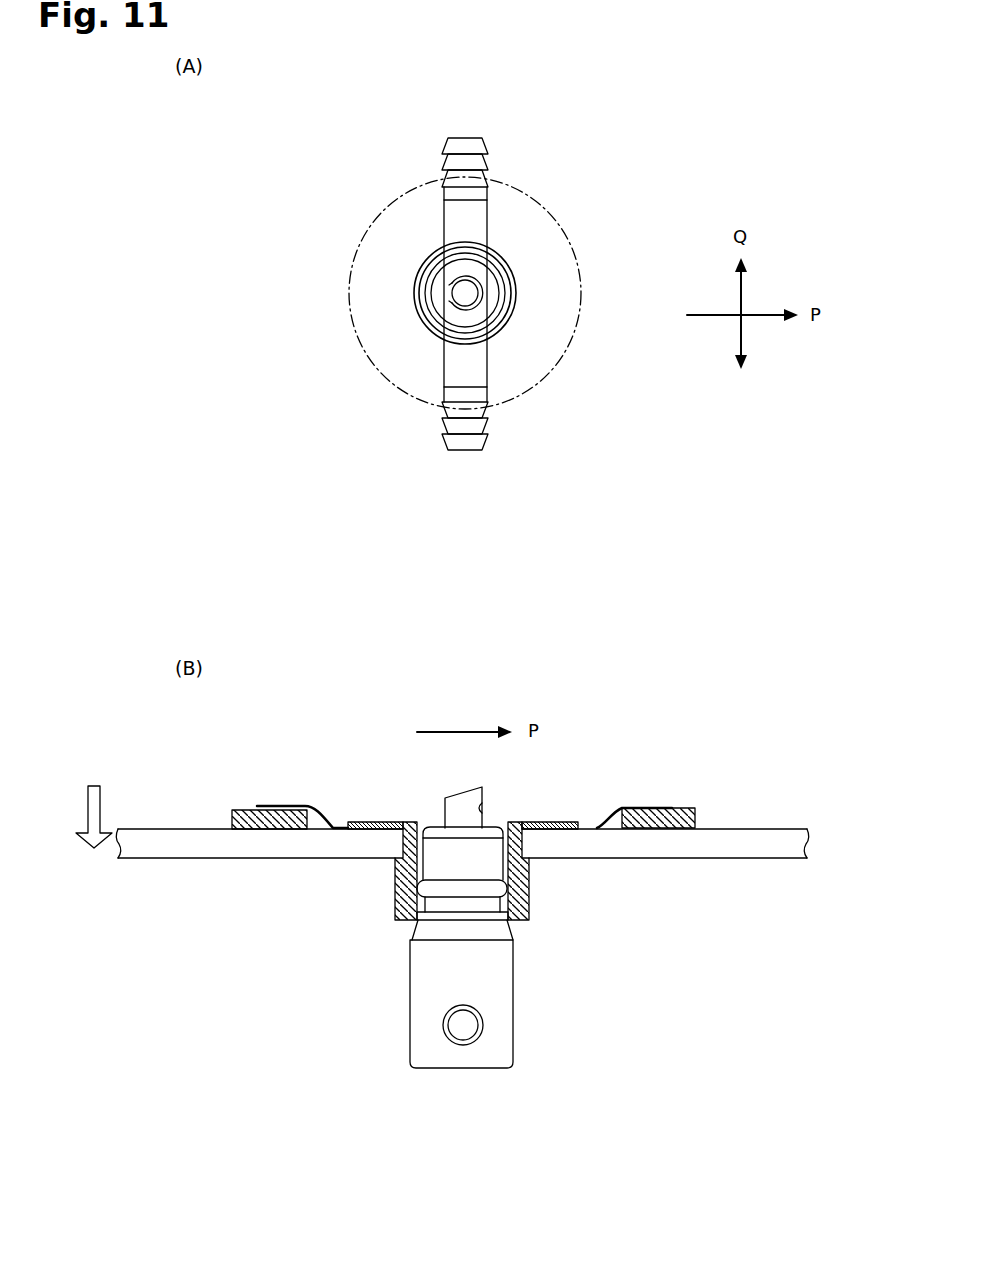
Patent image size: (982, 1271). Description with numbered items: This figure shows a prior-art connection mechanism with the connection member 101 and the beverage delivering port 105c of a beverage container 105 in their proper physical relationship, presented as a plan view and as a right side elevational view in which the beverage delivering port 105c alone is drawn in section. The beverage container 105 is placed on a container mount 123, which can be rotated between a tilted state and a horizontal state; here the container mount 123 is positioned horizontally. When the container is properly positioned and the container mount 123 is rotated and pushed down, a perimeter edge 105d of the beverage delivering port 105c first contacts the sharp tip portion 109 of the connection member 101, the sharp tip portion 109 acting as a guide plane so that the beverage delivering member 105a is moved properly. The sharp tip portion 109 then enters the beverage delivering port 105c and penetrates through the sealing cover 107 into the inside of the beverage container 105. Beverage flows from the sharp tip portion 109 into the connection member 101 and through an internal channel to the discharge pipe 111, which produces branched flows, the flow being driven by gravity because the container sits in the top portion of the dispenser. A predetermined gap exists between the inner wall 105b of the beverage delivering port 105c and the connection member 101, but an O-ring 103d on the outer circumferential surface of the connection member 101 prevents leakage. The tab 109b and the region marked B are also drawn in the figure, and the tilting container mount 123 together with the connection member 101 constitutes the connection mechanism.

The connection member 101 is at (510, 272).
The beverage container 105 is at (553, 370).
The beverage delivering member 105a is at (530, 898).
The inner wall 105b is at (425, 327).
The beverage delivering port 105c is at (396, 868).
The perimeter edge 105d is at (413, 922).
The sealing cover 107 is at (440, 828).
The sharp tip portion 109 is at (483, 292).
The tab 109b is at (478, 808).
The discharge pipe 111 is at (487, 170).
The container mount 123 is at (660, 858).
The O-ring 103d is at (465, 890).
The bump B is at (682, 808).